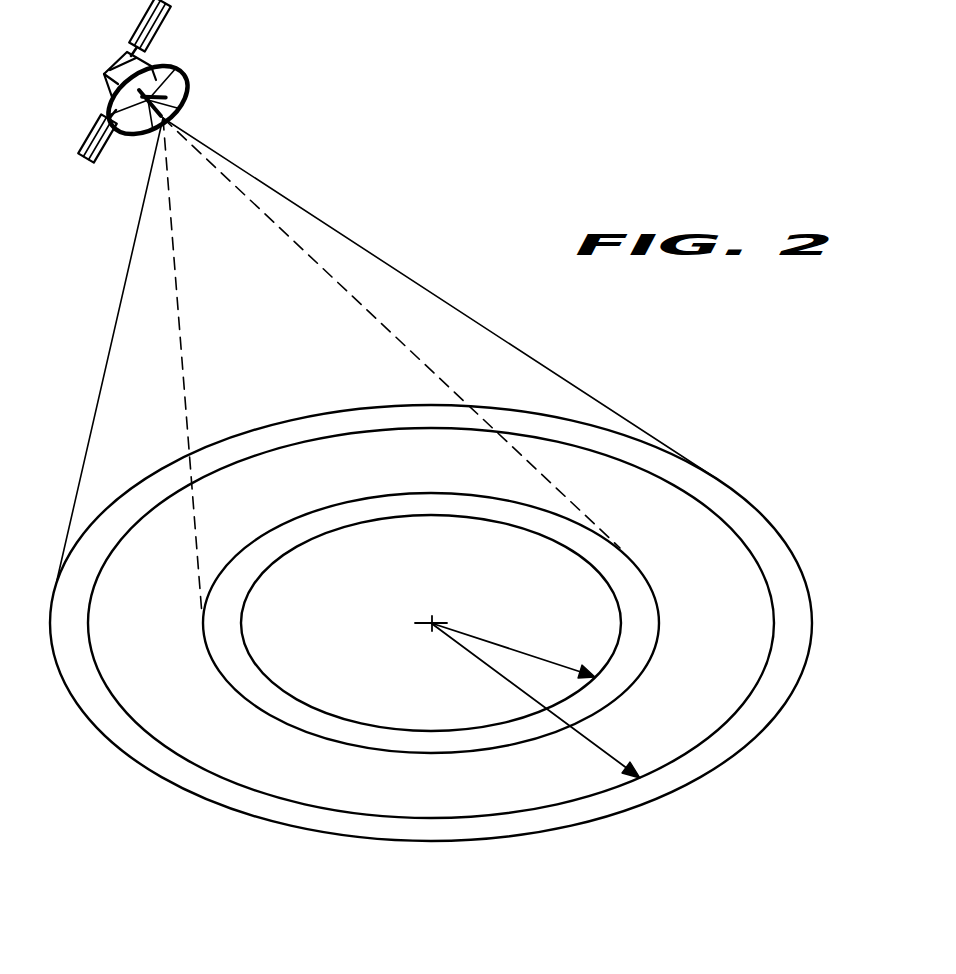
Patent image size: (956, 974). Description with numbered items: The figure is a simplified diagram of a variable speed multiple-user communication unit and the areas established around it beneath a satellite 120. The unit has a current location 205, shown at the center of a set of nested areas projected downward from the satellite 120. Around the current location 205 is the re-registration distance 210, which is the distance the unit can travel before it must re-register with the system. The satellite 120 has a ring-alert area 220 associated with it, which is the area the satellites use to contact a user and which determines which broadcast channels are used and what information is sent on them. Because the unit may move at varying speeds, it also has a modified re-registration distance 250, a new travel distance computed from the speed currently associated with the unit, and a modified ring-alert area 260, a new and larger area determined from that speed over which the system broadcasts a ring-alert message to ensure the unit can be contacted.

The satellite 120 is at (120, 58).
The current location 205 is at (430, 619).
The re-registration distance 210 is at (512, 650).
The ring-alert area 220 is at (659, 617).
The modified re-registration distance 250 is at (507, 679).
The modified ring-alert area 260 is at (812, 617).